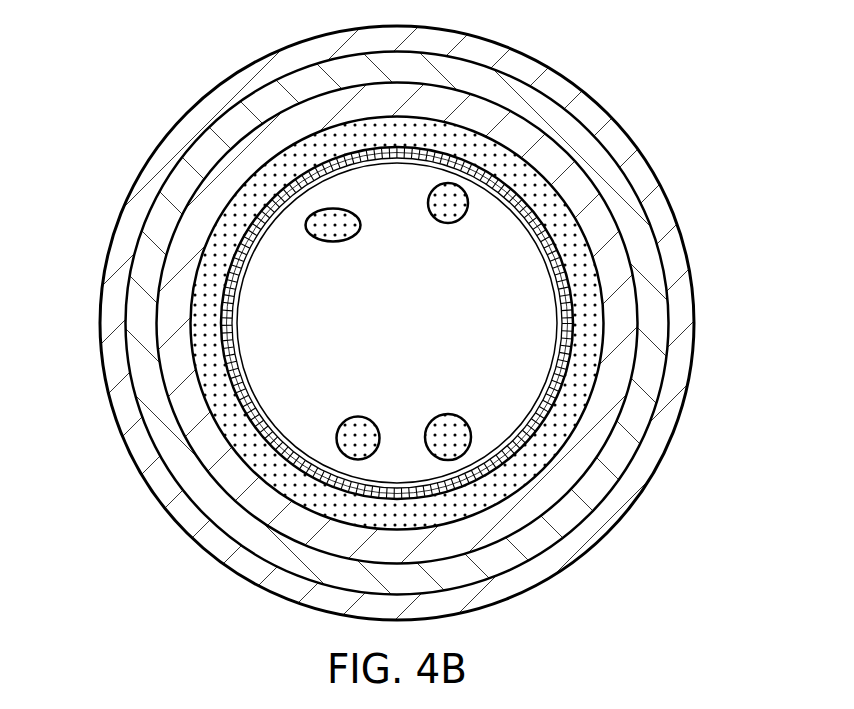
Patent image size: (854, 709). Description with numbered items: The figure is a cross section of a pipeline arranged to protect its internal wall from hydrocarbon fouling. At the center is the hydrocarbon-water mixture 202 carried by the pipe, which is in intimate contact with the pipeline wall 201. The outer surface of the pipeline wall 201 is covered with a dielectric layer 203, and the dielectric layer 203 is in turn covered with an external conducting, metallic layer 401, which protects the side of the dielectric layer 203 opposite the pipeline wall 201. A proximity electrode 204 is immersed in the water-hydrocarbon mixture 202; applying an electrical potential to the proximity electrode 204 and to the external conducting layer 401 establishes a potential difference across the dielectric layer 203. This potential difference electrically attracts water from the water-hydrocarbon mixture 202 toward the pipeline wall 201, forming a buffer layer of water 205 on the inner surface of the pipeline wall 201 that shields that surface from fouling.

The pipeline wall 201 is at (570, 182).
The hydrocarbon-water mixture 202 is at (260, 350).
The dielectric layer 203 is at (652, 293).
The proximity electrode 204 is at (523, 433).
The buffer layer of water 205 is at (213, 220).
The external conducting layer 401 is at (695, 367).